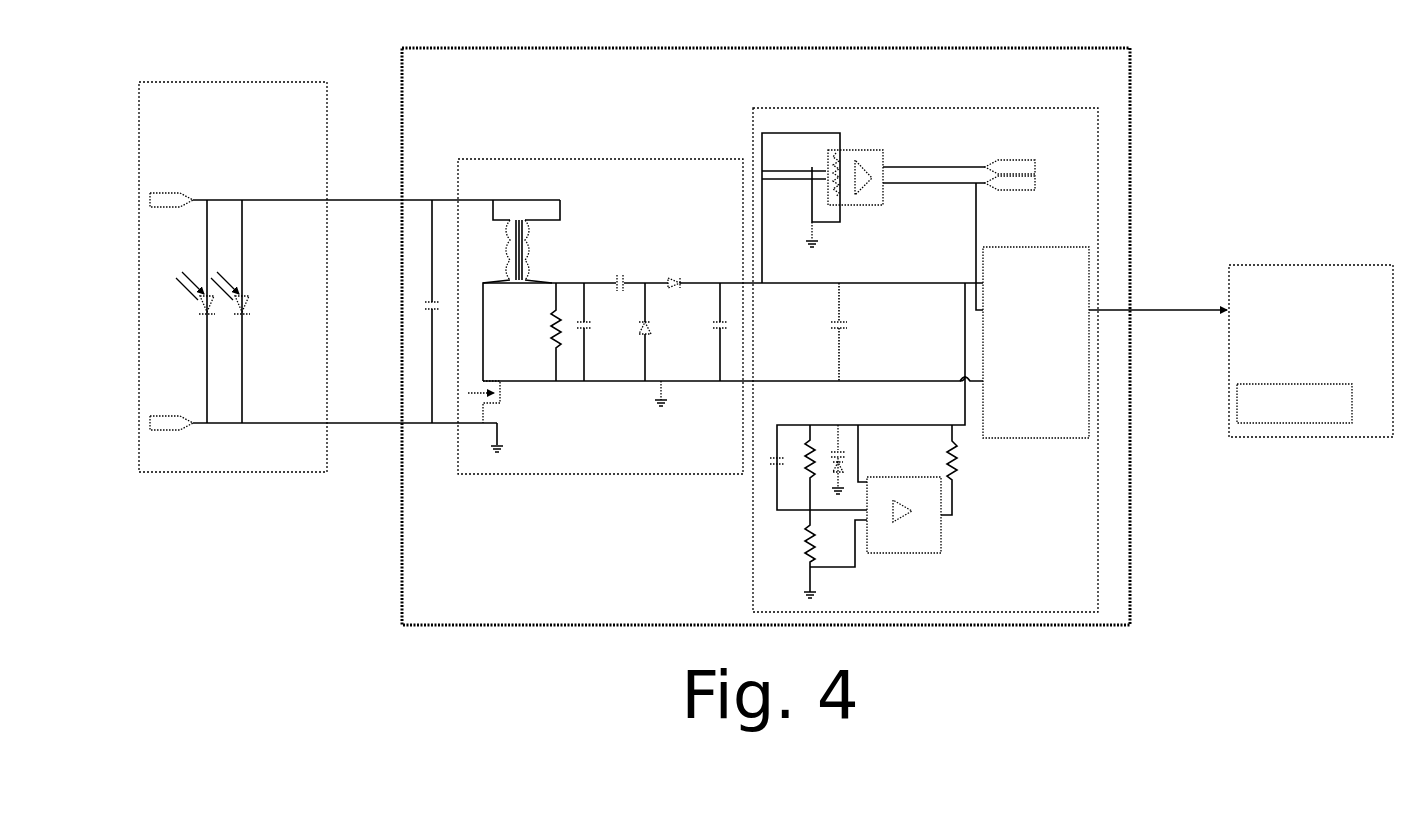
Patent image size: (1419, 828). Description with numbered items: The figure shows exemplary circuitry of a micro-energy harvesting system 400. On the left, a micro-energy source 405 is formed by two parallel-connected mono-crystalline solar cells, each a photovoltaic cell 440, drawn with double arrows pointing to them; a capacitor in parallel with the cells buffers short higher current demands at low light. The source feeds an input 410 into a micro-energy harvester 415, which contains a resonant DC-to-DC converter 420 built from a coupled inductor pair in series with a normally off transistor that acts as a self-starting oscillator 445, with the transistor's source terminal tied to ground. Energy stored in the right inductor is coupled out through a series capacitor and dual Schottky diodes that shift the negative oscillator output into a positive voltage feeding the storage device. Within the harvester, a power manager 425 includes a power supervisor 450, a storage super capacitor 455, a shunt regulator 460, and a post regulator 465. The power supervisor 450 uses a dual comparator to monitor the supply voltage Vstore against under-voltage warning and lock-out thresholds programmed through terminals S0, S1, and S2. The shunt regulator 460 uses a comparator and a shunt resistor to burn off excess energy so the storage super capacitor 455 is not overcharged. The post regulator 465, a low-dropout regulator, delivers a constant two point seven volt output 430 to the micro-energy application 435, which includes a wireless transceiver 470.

The system 400 is at (1172, 62).
The micro-energy source 405 is at (180, 82).
The input 410 is at (405, 200).
The micro-energy harvester 415 is at (713, 47).
The resonant DC-to-DC converter 420 is at (623, 160).
The power manager 425 is at (965, 107).
The output 430 is at (1133, 312).
The micro-energy application 435 is at (1312, 265).
The photovoltaic cell 440 is at (248, 293).
The self-starting oscillator 445 is at (500, 423).
The power supervisor 450 is at (838, 147).
The storage super capacitor 455 is at (837, 322).
The shunt regulator 460 is at (818, 425).
The post regulator 465 is at (1040, 250).
The wireless transceiver 470 is at (1295, 384).